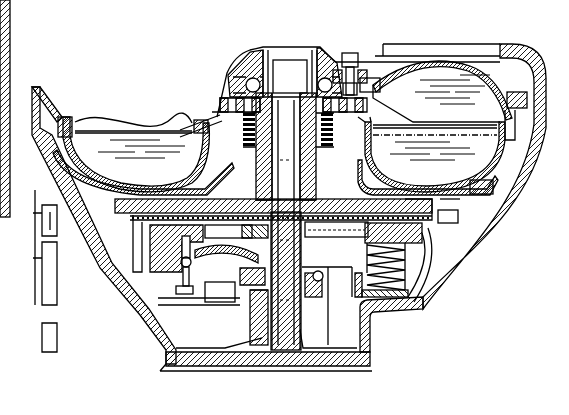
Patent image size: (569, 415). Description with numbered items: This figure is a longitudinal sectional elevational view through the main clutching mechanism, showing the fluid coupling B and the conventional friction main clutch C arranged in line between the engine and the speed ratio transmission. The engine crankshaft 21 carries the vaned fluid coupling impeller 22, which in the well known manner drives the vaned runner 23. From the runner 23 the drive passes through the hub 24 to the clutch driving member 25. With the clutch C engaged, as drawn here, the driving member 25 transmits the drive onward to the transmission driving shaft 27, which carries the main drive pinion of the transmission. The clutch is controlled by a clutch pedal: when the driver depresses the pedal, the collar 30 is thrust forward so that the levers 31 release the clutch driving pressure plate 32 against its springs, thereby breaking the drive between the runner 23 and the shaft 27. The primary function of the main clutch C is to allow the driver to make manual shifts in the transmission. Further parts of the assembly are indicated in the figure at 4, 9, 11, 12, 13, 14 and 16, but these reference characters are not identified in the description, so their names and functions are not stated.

The cover bolt 4 is at (262, 44).
The bearing cap 9 is at (240, 46).
The housing 11 is at (38, 1).
The left chamber bowl 12 is at (140, 284).
The right chamber bowl 13 is at (468, 160).
The bowl rim flange 14 is at (452, 172).
The valve block 16 is at (325, 232).
The engine crankshaft 21 is at (325, 47).
The fluid coupling impeller 22 is at (455, 80).
The vaned runner 23 is at (415, 304).
The hub 24 is at (305, 221).
The clutch driving member 25 is at (432, 236).
The transmission driving shaft 27 is at (222, 290).
The collar 30 is at (312, 302).
The levers 31 is at (252, 300).
The clutch driving pressure plate 32 is at (172, 262).
The fluid coupling B is at (530, 160).
The friction main clutch C is at (445, 278).